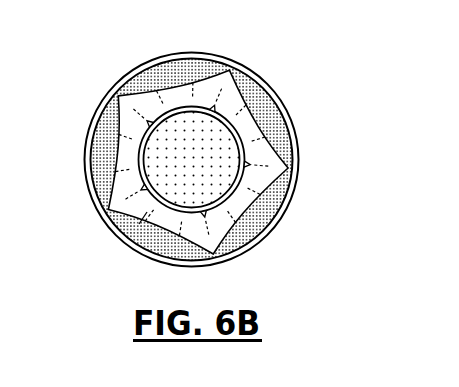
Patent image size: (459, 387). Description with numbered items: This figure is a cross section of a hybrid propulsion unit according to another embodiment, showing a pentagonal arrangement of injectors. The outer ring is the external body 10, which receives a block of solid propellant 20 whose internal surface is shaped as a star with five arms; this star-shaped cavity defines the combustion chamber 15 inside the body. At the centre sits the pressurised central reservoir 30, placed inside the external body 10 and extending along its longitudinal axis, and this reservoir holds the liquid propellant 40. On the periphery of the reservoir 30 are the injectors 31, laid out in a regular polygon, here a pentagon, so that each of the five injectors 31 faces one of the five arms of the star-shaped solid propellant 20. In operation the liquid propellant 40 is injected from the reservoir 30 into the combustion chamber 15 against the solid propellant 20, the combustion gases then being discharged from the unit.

The external body 10 is at (297, 158).
The combustion chamber 15 is at (108, 224).
The solid propellant 20 is at (277, 198).
The pressurised central reservoir 30 is at (123, 155).
The injector 31 is at (218, 108).
The liquid propellant 40 is at (181, 124).